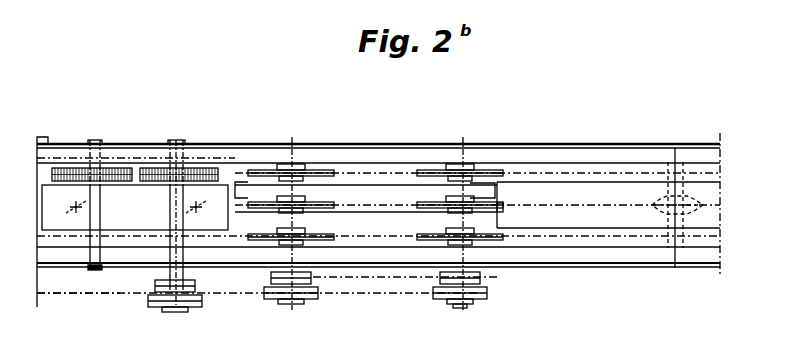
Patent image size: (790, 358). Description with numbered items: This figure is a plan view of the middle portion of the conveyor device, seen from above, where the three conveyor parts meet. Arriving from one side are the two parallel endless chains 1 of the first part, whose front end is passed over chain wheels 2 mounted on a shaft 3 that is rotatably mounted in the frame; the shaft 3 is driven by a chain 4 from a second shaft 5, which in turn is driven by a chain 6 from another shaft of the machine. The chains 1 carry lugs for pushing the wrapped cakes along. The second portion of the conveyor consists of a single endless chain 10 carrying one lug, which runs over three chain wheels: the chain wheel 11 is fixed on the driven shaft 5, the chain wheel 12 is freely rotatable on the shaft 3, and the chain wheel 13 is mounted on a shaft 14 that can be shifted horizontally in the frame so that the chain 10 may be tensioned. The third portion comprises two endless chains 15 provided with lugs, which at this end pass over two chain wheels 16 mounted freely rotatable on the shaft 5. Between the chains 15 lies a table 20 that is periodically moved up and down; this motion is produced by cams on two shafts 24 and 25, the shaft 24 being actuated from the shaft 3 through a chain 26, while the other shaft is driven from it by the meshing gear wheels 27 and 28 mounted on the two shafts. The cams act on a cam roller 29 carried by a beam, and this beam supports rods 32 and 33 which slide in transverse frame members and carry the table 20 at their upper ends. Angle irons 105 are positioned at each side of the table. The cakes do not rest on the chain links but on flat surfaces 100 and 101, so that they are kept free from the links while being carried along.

The endless chains 1 is at (578, 217).
The chain wheels 2 is at (417, 175).
The shaft 3 is at (465, 306).
The chain 4 is at (353, 280).
The second shaft 5 is at (287, 187).
The chain 6 is at (85, 295).
The endless chain 10 is at (350, 210).
The chain wheel 11 is at (246, 212).
The chain wheel 12 is at (512, 185).
The chain wheel 13 is at (658, 200).
The shaft 14 is at (680, 178).
The endless chains 15 is at (232, 160).
The chain wheels 16 is at (248, 172).
The table 20 is at (68, 190).
The shaft 24 is at (183, 143).
The shaft 25 is at (100, 150).
The chain 26 is at (432, 297).
The gear wheel 27 is at (157, 178).
The gear wheel 28 is at (62, 180).
The cam roller 29 is at (162, 298).
The rod 32 is at (204, 213).
The rod 33 is at (65, 213).
The flat surface 100 is at (380, 222).
The flat surface 101 is at (565, 188).
The angle irons 105 is at (487, 153).